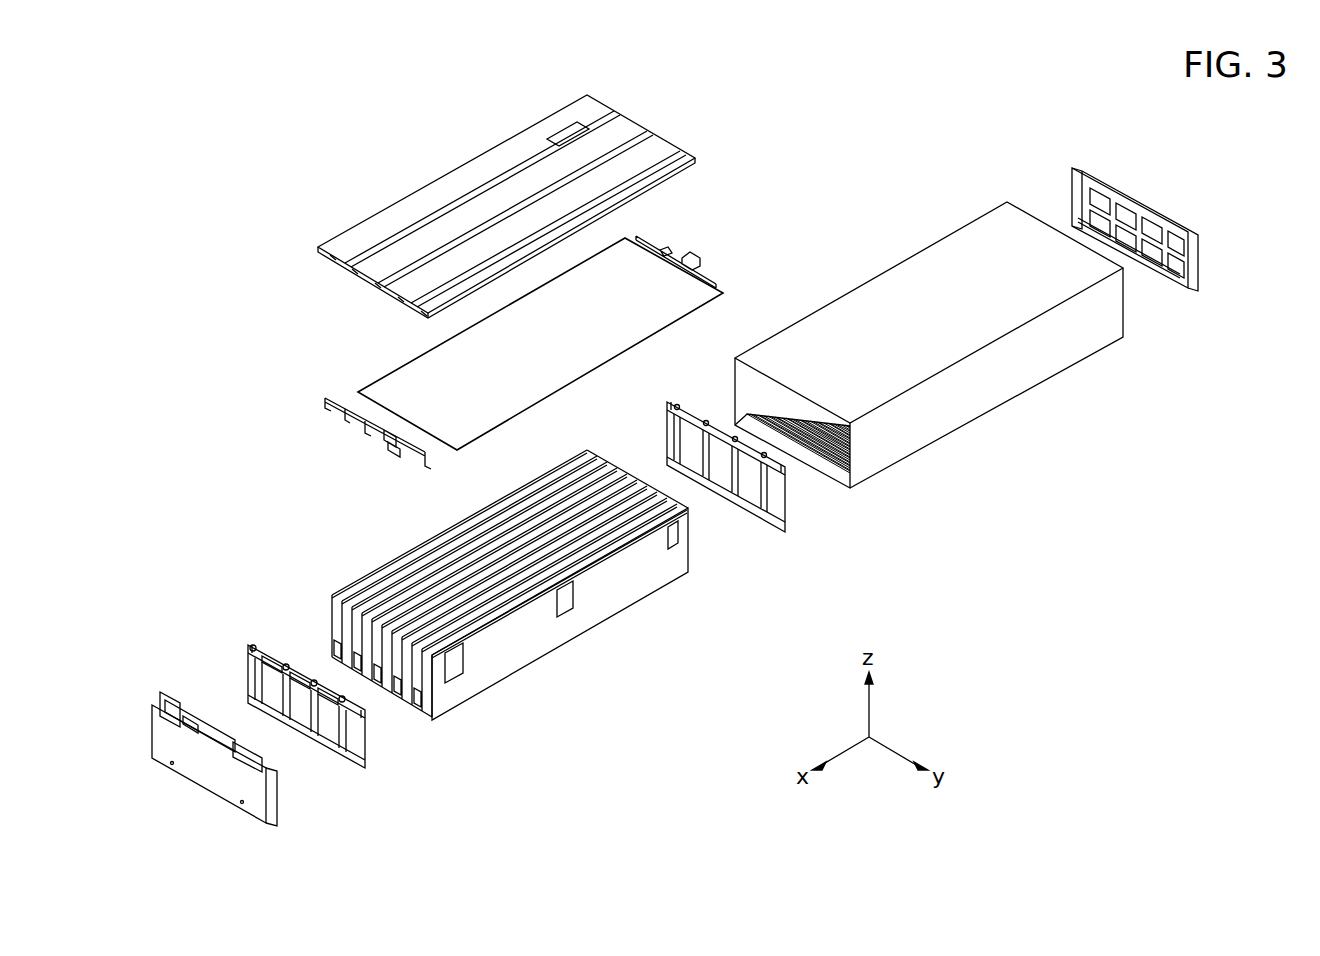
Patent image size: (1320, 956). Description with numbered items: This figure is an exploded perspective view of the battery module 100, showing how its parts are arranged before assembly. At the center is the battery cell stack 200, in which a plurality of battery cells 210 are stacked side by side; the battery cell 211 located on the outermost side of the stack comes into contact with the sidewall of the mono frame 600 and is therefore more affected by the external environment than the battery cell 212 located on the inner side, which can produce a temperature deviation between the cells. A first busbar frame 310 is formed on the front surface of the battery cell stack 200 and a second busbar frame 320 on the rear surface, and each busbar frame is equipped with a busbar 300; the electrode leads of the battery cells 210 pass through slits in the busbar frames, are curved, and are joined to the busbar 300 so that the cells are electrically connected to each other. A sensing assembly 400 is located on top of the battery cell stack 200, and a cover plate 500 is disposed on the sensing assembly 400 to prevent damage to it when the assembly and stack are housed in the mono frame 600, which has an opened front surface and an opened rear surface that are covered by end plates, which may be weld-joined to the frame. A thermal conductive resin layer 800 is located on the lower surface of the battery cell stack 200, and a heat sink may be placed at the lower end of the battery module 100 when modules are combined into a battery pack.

The battery module 100 is at (236, 134).
The battery cell stack 200 is at (561, 586).
The battery cells 210 is at (521, 586).
The outermost battery cell 211 is at (498, 657).
The inner battery cell 212 is at (498, 552).
The busbar 300 is at (263, 680).
The first busbar frame 310 is at (248, 655).
The second busbar frame 320 is at (782, 508).
The sensing assembly 400 is at (420, 378).
The cover plate 500 is at (435, 198).
The mono frame 600 is at (894, 288).
The thermal conductive resin layer 800 is at (832, 433).